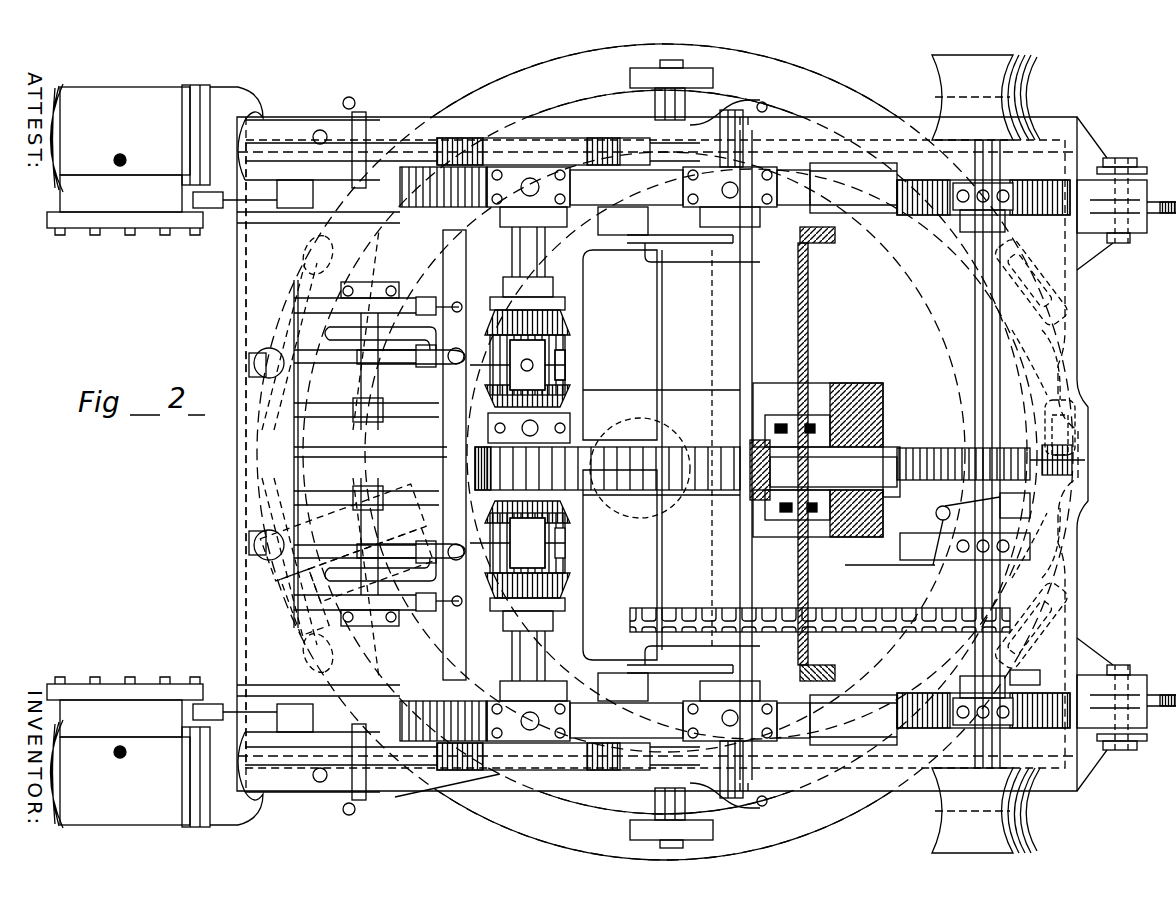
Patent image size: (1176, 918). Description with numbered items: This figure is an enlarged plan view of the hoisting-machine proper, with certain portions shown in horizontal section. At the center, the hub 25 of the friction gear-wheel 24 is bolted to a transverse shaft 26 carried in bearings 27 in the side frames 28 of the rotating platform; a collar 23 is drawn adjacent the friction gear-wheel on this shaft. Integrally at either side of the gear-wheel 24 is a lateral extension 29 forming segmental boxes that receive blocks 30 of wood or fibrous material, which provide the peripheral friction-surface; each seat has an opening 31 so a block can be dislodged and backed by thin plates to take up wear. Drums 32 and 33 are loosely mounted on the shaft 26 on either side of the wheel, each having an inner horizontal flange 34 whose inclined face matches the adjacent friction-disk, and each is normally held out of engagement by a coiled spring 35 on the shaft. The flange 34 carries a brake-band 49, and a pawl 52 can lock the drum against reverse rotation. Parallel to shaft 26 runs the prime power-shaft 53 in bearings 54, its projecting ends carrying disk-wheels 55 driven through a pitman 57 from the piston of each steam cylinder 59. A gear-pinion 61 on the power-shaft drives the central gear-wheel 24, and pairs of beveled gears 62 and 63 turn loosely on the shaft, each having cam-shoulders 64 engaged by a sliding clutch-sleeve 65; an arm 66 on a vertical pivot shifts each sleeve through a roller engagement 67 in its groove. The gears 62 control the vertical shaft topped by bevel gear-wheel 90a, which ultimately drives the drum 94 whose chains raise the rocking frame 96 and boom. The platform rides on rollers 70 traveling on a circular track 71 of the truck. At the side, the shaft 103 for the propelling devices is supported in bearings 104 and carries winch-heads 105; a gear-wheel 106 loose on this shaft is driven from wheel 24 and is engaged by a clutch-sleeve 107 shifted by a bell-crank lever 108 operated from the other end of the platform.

The gear 23 is at (963, 454).
The friction gear-wheel 24 is at (823, 470).
The hub 25 is at (790, 420).
The transverse shaft 26 is at (808, 318).
The bearings 27 is at (740, 190).
The side frames 28 is at (853, 454).
The lateral extension 29 is at (850, 415).
The sections or blocks 30 is at (900, 455).
The opening 31 is at (782, 422).
The drum 32 is at (642, 565).
The drum 33 is at (642, 345).
The horizontal flange 34 is at (860, 530).
The coiled spring 35 is at (790, 520).
The brake-band 49 is at (695, 445).
The pawl 52 is at (630, 238).
The prime power-shaft 53 is at (535, 260).
The bearings 54 is at (535, 185).
The disk-wheels 55 is at (555, 152).
The pitman 57 is at (445, 795).
The cylinder 59 is at (213, 456).
The gear-pinion 61 is at (495, 465).
The beveled gears 62 is at (550, 315).
The beveled gears 63 is at (565, 605).
The cam-shoulders 64 is at (568, 362).
The clutch-sleeve 65 is at (548, 355).
The arm 66 is at (495, 352).
The roller engagement 67 is at (555, 560).
The rollers or wheels 70 is at (690, 82).
The track or way 71 is at (905, 310).
The bevel gear-wheel 90a is at (535, 362).
The drum 94 is at (1126, 454).
The rocking frame 96 is at (1141, 492).
The shaft 103 is at (990, 365).
The bearings 104 is at (1040, 668).
The winch-heads 105 is at (986, 454).
The gear-wheel 106 is at (1075, 465).
The clutch-sleeve 107 is at (1022, 509).
The bell-crank lever 108 is at (953, 531).